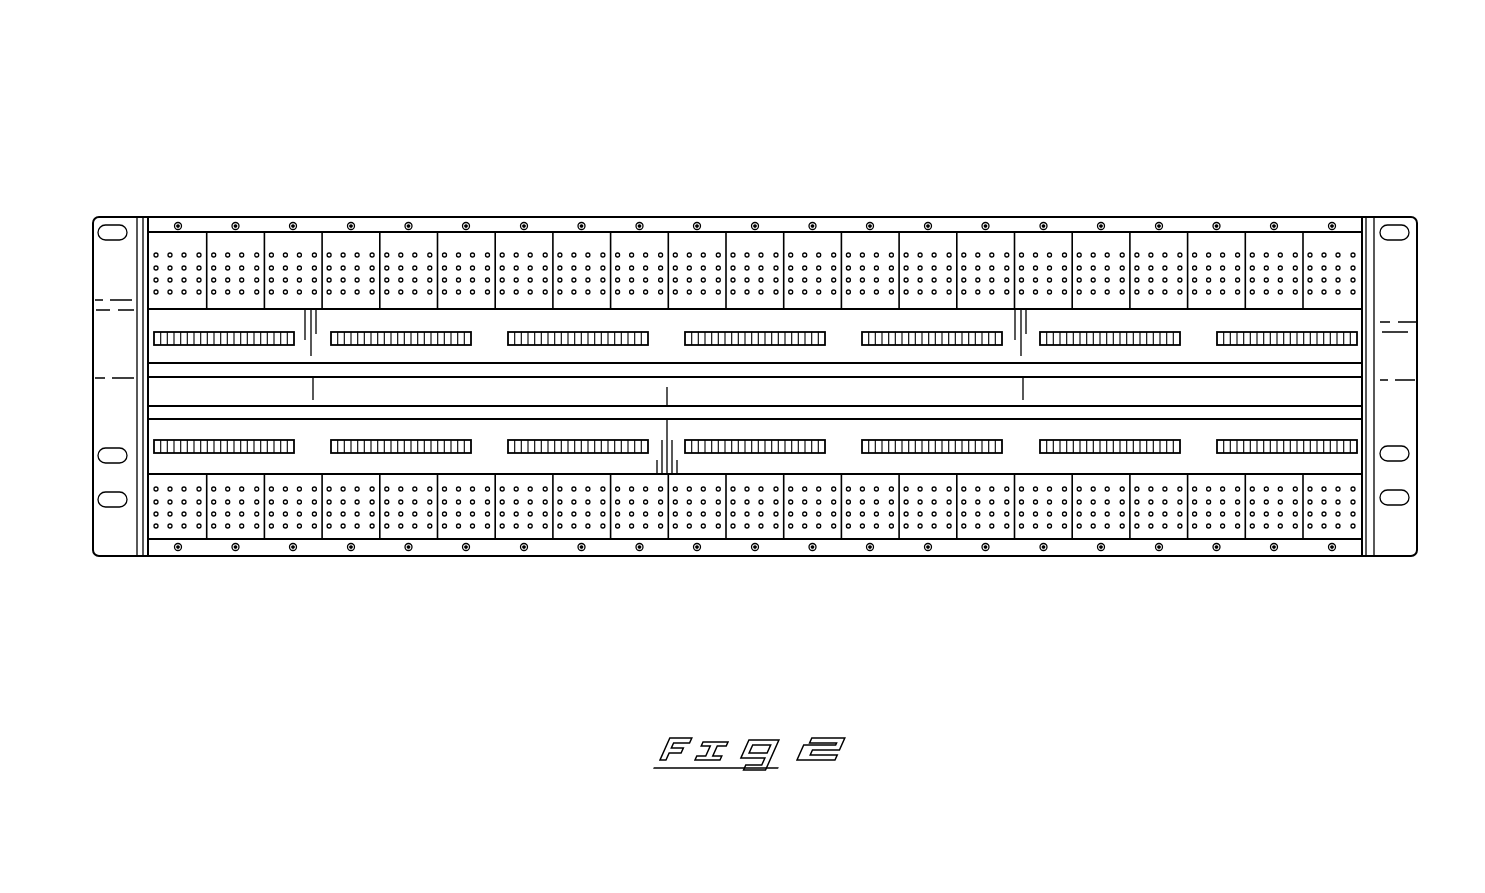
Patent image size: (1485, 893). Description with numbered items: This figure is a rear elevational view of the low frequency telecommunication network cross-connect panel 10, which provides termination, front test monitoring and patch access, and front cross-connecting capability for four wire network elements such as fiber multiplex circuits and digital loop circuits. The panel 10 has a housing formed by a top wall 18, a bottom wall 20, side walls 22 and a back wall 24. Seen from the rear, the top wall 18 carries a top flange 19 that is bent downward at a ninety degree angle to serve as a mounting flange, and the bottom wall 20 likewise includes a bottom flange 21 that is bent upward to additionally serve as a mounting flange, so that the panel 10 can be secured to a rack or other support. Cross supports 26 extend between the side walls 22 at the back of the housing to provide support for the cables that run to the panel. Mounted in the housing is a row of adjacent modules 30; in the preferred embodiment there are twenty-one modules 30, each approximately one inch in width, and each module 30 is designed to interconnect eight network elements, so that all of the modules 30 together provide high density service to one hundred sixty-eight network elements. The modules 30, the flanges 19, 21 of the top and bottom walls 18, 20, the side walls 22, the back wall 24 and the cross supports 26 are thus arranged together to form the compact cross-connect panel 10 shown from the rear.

The cross-connect panel 10 is at (996, 128).
The top wall 18 is at (612, 226).
The top flange 19 is at (1245, 228).
The bottom wall 20 is at (555, 557).
The bottom flange 21 is at (317, 548).
The side walls 22 is at (145, 527).
The back wall 24 is at (165, 432).
The cross supports 26 is at (1342, 410).
The modules 30 is at (452, 245).